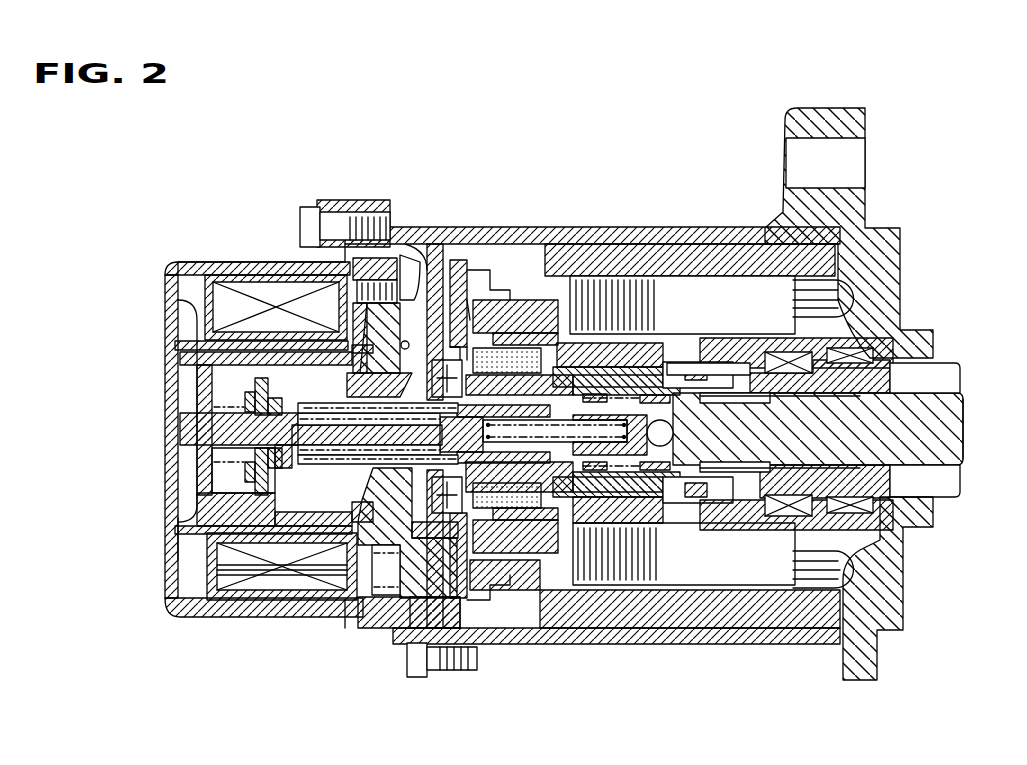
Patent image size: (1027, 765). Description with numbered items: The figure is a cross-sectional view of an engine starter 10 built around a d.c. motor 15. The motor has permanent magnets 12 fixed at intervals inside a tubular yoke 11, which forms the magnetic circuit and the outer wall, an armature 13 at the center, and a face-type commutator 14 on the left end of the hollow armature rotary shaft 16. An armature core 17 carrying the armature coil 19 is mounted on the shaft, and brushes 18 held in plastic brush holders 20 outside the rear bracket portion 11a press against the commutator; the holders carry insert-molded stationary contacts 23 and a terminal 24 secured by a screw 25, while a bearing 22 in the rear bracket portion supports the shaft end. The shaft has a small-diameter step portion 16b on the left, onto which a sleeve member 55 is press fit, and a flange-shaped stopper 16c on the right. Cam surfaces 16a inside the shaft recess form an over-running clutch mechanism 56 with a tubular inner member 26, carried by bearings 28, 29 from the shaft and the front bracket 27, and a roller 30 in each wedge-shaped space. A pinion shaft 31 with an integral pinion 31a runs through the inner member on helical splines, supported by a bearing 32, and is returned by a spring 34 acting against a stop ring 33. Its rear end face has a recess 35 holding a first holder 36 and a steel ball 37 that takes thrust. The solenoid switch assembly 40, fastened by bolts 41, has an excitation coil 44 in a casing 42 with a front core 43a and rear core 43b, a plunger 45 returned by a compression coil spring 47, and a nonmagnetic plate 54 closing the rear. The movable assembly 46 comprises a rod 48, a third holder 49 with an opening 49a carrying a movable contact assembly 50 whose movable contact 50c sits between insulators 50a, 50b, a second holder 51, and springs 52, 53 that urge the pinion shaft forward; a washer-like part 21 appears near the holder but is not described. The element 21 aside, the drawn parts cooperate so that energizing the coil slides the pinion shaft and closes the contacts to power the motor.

The engine starter 10 is at (558, 168).
The tubular yoke 11 is at (604, 275).
The rear bracket portion 11a is at (437, 272).
The permanent magnets 12 is at (560, 242).
The armature 13 is at (648, 262).
The face-type commutator 14 is at (470, 270).
The d.c. motor 15 is at (510, 262).
The armature rotary shaft 16 is at (660, 378).
The cam surfaces 16a is at (715, 360).
The small-diameter step portion 16b is at (600, 345).
The flange-shaped stopper 16c is at (860, 562).
The armature core 17 is at (690, 290).
The brushes 18 is at (400, 632).
The armature coil 19 is at (510, 590).
The brush holders 20 is at (372, 560).
The washer 21 is at (342, 622).
The bearing 22 is at (458, 672).
The stationary contacts 23 is at (352, 395).
The terminal 24 is at (402, 280).
The screw 25 is at (390, 258).
The tubular inner member 26 is at (722, 472).
The front bracket 27 is at (892, 254).
The bearing 28 is at (790, 516).
The bearing 29 is at (905, 515).
The roller 30 is at (748, 528).
The pinion shaft 31 is at (878, 405).
The pinion 31a is at (945, 478).
The bearing 32 is at (686, 470).
The stop ring 33 is at (598, 392).
The spring 34 is at (622, 398).
The recess 35 is at (592, 480).
The first holder 36 is at (530, 500).
The steel ball 37 is at (652, 445).
The solenoid switch assembly 40 is at (183, 258).
The bolts 41 is at (310, 212).
The casing 42 is at (218, 262).
The front core 43a is at (340, 342).
The rear core 43b is at (180, 302).
The excitation coil 44 is at (292, 562).
The plunger 45 is at (198, 395).
The movable assembly 46 is at (276, 562).
The compression coil spring 47 is at (200, 398).
The rod 48 is at (198, 443).
The third holder 49 is at (222, 427).
The opening 49a is at (300, 478).
The movable contact assembly 50 is at (212, 407).
The insulator 50a is at (197, 354).
The insulator 50b is at (250, 602).
The movable contact 50c is at (215, 472).
The second holder 51 is at (450, 322).
The spring 52 is at (355, 405).
The spring 53 is at (520, 348).
The nonmagnetic plate 54 is at (166, 545).
The sleeve member 55 is at (622, 600).
The over-running clutch mechanism 56 is at (695, 365).